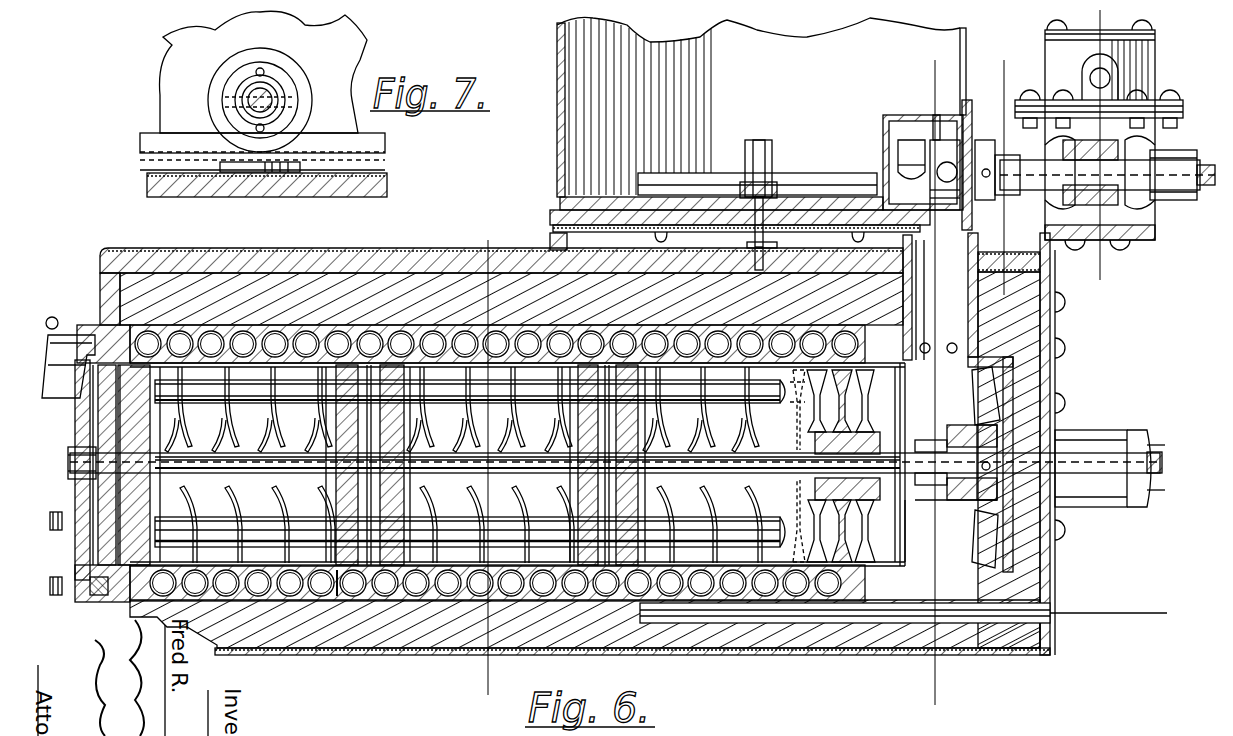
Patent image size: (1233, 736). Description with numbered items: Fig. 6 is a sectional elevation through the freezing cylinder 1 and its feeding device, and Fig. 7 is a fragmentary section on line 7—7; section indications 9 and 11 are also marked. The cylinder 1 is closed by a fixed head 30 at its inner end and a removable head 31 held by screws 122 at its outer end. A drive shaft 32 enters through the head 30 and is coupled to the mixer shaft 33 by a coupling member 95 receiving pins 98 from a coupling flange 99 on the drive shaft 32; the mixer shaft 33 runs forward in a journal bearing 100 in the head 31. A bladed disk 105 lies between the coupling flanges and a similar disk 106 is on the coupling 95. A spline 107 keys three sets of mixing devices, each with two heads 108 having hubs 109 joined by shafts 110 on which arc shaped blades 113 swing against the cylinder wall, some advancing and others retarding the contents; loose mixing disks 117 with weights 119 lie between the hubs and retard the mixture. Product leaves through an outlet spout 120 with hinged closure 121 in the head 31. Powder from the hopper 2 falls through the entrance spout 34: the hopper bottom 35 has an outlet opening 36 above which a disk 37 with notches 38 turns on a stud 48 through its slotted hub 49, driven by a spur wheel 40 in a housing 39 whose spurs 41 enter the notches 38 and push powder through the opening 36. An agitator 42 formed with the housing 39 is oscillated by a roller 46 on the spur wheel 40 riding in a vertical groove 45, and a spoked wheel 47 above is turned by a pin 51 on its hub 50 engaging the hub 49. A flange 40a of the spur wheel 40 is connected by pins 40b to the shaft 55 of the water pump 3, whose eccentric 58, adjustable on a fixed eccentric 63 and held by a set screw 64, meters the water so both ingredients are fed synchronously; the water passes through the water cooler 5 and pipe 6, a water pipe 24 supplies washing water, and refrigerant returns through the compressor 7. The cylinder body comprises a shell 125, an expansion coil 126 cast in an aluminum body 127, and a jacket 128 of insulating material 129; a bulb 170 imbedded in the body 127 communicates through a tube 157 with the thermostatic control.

In FIG. 6, the freezing cylinder 1 is at (914, 531).
In FIG. 6, the hopper 2 is at (761, 107).
In FIG. 6, the water pump 3 is at (1135, 72).
In FIG. 6, the water cooler 5 is at (955, 80).
In FIG. 6, the pipe 6 is at (950, 354).
In FIG. 6, the compressor 7 is at (991, 87).
In FIG. 6, the section line 9- 9 is at (505, 242).
In FIG. 6, the section line 11- 11 is at (1088, 20).
In FIG. 6, the water pipe 24 is at (898, 362).
In FIG. 6, the head 30 is at (1010, 400).
In FIG. 6, the removable head 31 is at (85, 415).
In FIG. 6, the drive shaft 32 is at (1152, 450).
In FIG. 6, the mixer shaft 33 is at (762, 462).
In FIG. 7, the entrance spout 34 is at (250, 172).
In FIG. 6, the entrance spout 34 is at (932, 297).
In FIG. 6, the bottom 35 is at (555, 240).
In FIG. 6, the outlet opening 36 is at (940, 300).
In FIG. 6, the rotatable disk 37 is at (850, 225).
In FIG. 6, the notches 38 is at (565, 203).
In FIG. 6, the housing 39 is at (912, 116).
In FIG. 6, the spur wheel 40 is at (950, 155).
In FIG. 7, the flange 40a is at (293, 78).
In FIG. 6, the flange 40a is at (980, 200).
In FIG. 7, the pins 40b is at (256, 128).
In FIG. 6, the spurs 41 is at (942, 177).
In FIG. 6, the agitator 42 is at (795, 210).
In FIG. 6, the vertical groove 45 is at (905, 122).
In FIG. 6, the roller 46 is at (905, 142).
In FIG. 6, the spoked wheel 47 is at (712, 173).
In FIG. 6, the stud 48 is at (766, 243).
In FIG. 6, the slotted hub 49 is at (772, 185).
In FIG. 6, the hub 50 is at (748, 140).
In FIG. 6, the pin 51 is at (760, 143).
In FIG. 6, the shaft 55 is at (1207, 190).
In FIG. 6, the eccentric 58 is at (1080, 190).
In FIG. 6, the eccentric 63 is at (1115, 160).
In FIG. 6, the set screw 64 is at (1066, 148).
In FIG. 6, the coupling member 95 is at (935, 500).
In FIG. 6, the pins 98 is at (950, 440).
In FIG. 6, the coupling flange 99 is at (995, 445).
In FIG. 6, the journal bearing 100 is at (70, 480).
In FIG. 6, the disk having inclined blades 105 is at (990, 368).
In FIG. 6, the disk having inclined blades 106 is at (870, 546).
In FIG. 6, the spline 107 is at (722, 475).
In FIG. 6, the heads 108 is at (162, 365).
In FIG. 6, the hub 109 is at (672, 432).
In FIG. 6, the shafts 110 is at (560, 520).
In FIG. 6, the blade 113 is at (300, 435).
In FIG. 6, the loose mixing disk 117 is at (133, 365).
In FIG. 6, the weights 119 is at (843, 568).
In FIG. 6, the outlet spout 120 is at (74, 362).
In FIG. 6, the hinged closure 121 is at (48, 338).
In FIG. 6, the screws 122 is at (52, 596).
In FIG. 6, the shell 125 is at (305, 603).
In FIG. 6, the cooling or expansion coil 126 is at (450, 598).
In FIG. 6, the body 127 is at (337, 600).
In FIG. 6, the jacket 128 is at (470, 250).
In FIG. 6, the insulating material 129 is at (280, 300).
In FIG. 6, the tube 157 is at (1150, 613).
In FIG. 6, the bulb 170 is at (1000, 623).